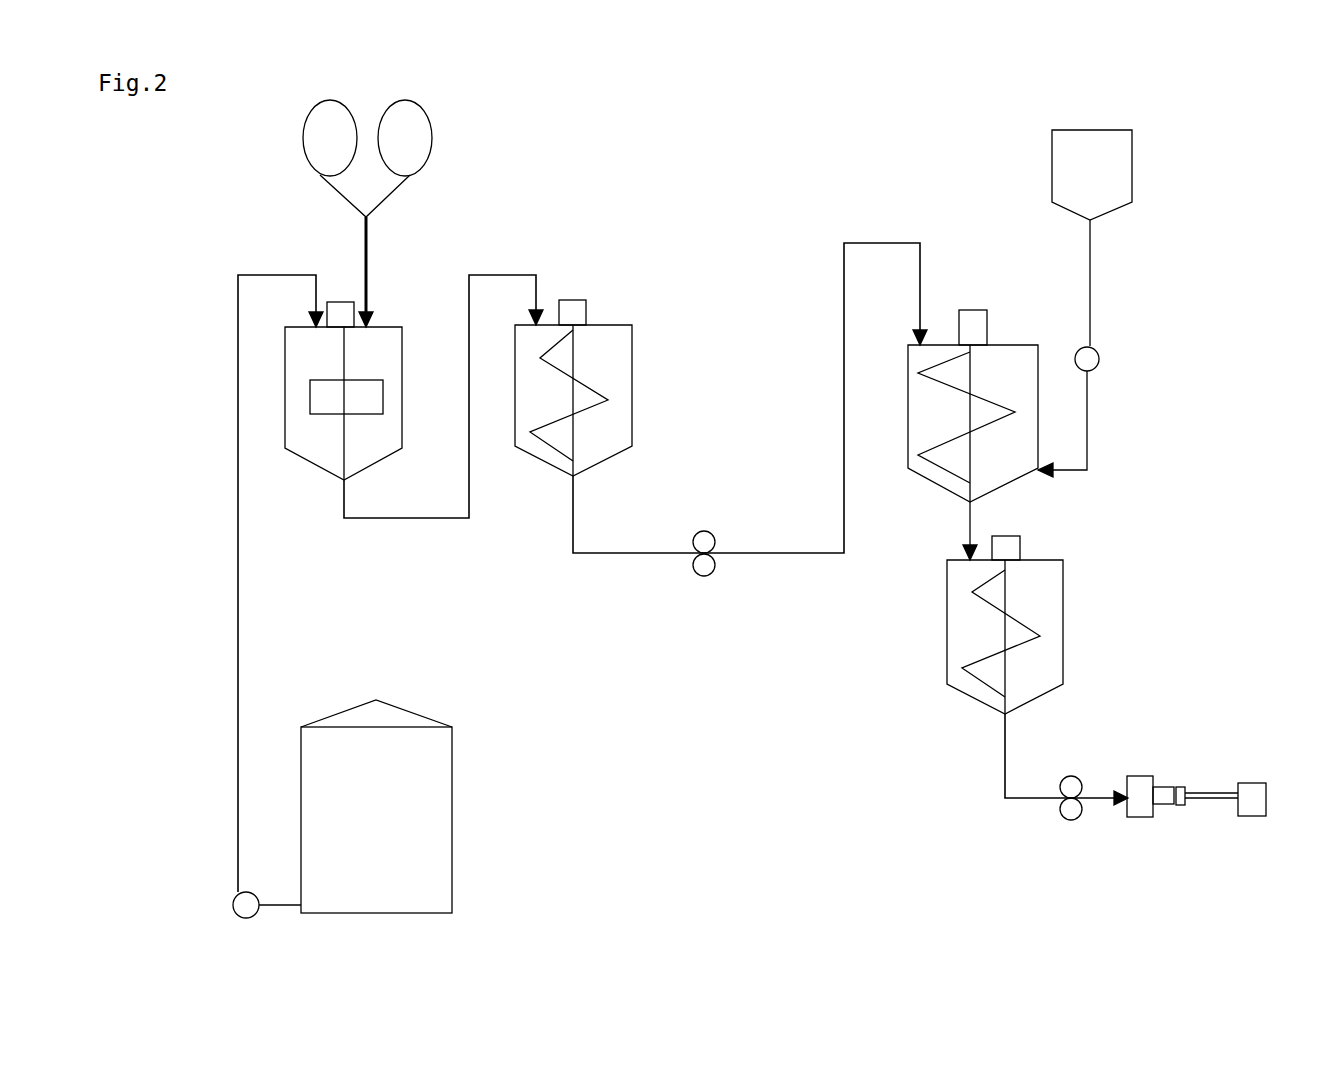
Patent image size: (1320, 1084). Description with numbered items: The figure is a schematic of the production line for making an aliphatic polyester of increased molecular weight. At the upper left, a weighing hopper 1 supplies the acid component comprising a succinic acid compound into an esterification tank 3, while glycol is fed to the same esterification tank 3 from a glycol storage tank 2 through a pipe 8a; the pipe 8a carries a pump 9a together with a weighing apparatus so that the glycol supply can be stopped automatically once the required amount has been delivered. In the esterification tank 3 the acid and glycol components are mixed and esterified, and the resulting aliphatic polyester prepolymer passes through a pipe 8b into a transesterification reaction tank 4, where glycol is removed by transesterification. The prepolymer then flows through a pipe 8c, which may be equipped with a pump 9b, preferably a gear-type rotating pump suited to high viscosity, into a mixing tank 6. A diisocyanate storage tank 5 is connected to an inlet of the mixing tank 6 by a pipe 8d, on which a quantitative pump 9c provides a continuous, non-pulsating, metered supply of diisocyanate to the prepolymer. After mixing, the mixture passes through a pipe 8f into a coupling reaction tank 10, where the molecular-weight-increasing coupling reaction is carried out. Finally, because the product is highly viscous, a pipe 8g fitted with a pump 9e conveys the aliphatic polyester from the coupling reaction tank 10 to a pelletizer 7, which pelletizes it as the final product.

The weighing hopper 1 is at (384, 213).
The glycol storage tank 2 is at (373, 806).
The esterification tank 3 is at (300, 485).
The transesterification reaction tank 4 is at (592, 388).
The diisocyanate storage tank 5 is at (1113, 175).
The mixing tank 6 is at (954, 406).
The pelletizer 7 is at (1218, 796).
The coupling reaction tank 10 is at (1036, 625).
The pipe 8a is at (222, 719).
The pipe 8b is at (410, 520).
The pipe 8c is at (822, 481).
The pipe 8d is at (1088, 348).
The pipe 8f is at (948, 509).
The pipe 8g is at (980, 762).
The pump 9a is at (199, 914).
The pump 9b is at (697, 587).
The quantitative pump 9c is at (1112, 355).
The pump 9e is at (1071, 826).